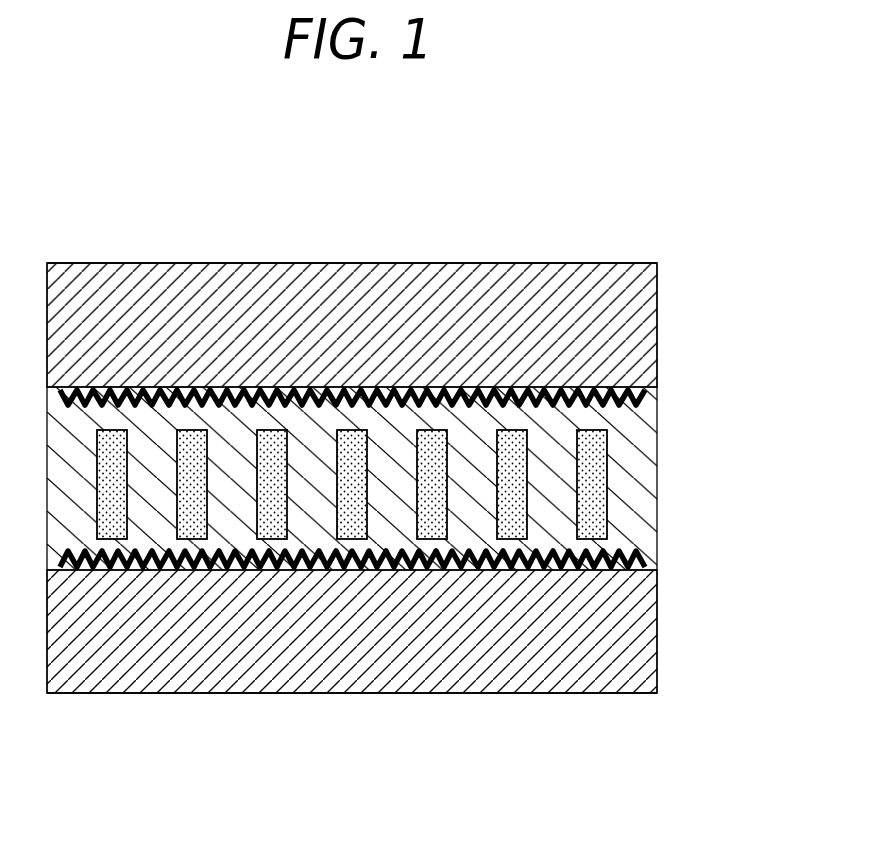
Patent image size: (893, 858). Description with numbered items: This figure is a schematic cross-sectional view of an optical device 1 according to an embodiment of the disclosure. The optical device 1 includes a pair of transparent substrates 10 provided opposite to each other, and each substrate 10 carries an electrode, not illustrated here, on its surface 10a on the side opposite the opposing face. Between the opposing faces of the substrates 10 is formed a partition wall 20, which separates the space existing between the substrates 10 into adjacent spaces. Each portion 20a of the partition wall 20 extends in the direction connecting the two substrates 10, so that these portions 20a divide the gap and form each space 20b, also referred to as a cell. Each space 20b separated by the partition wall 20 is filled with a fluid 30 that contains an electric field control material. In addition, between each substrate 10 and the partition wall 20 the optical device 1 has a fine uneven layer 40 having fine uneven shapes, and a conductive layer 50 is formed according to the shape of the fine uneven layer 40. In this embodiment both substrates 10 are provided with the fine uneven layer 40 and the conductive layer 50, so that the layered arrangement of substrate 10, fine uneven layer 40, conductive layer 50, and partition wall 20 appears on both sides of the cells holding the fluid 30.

The laminate 1 is at (664, 126).
The substrate 10 is at (637, 285).
The outer surface of substrate 10a is at (563, 262).
The intermediate layer 20 is at (630, 507).
The lower portion of intermediate layer 20a is at (152, 493).
The upper portion of intermediate layer 20b is at (276, 427).
The columnar member 30 is at (592, 475).
The bonding layer 40 is at (645, 387).
The projections of bonding layer 50 is at (628, 407).